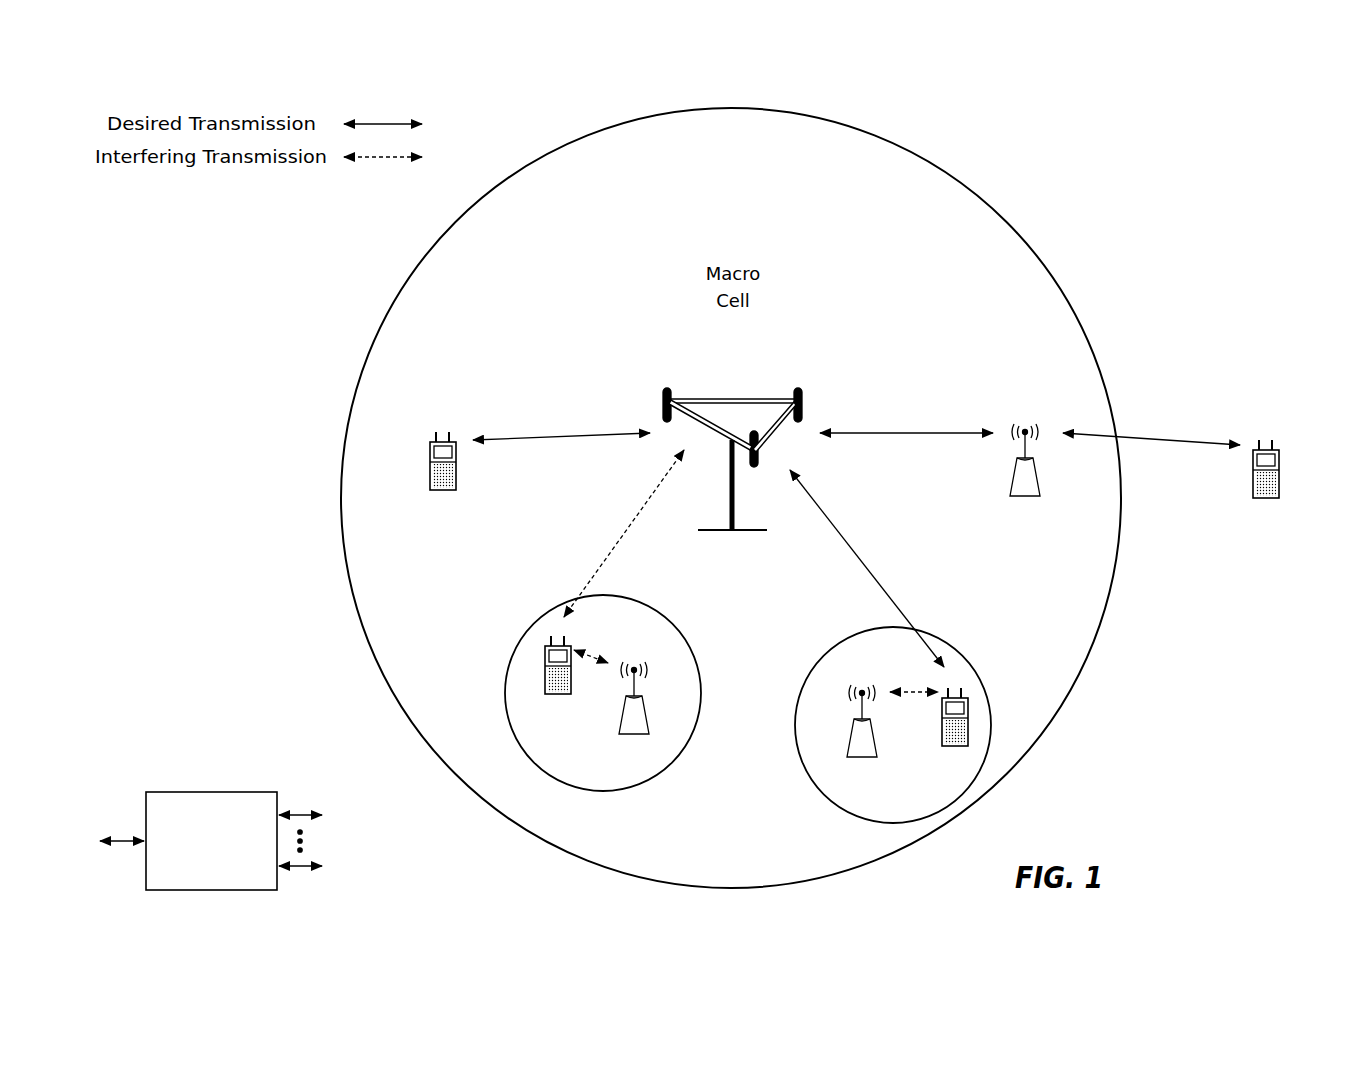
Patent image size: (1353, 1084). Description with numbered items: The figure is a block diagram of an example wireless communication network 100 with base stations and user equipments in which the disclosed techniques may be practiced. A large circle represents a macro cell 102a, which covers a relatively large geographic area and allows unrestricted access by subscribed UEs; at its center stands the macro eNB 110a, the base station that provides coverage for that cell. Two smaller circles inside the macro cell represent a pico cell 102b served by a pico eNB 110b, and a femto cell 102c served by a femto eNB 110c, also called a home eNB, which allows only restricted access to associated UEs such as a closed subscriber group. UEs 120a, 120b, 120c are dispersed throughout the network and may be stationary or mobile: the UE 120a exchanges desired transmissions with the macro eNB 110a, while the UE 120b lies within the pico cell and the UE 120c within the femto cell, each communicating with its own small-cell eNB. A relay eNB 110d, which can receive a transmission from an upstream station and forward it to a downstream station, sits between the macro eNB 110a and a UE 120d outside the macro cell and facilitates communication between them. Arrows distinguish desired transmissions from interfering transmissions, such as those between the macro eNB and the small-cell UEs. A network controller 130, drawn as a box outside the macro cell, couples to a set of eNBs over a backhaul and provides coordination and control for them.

The wireless communication network 100 is at (1192, 166).
The macro cell 102a is at (992, 210).
The pico cell 102b is at (678, 632).
The femto cell 102c is at (818, 660).
The macro eNB 110a is at (728, 399).
The pico eNB 110b is at (650, 722).
The femto eNB 110c is at (848, 745).
The relay eNB 110d is at (1027, 430).
The UE 120a is at (426, 448).
The UE 120b is at (546, 690).
The UE 120c is at (944, 740).
The UE 120d is at (1280, 458).
The network controller 130 is at (207, 792).